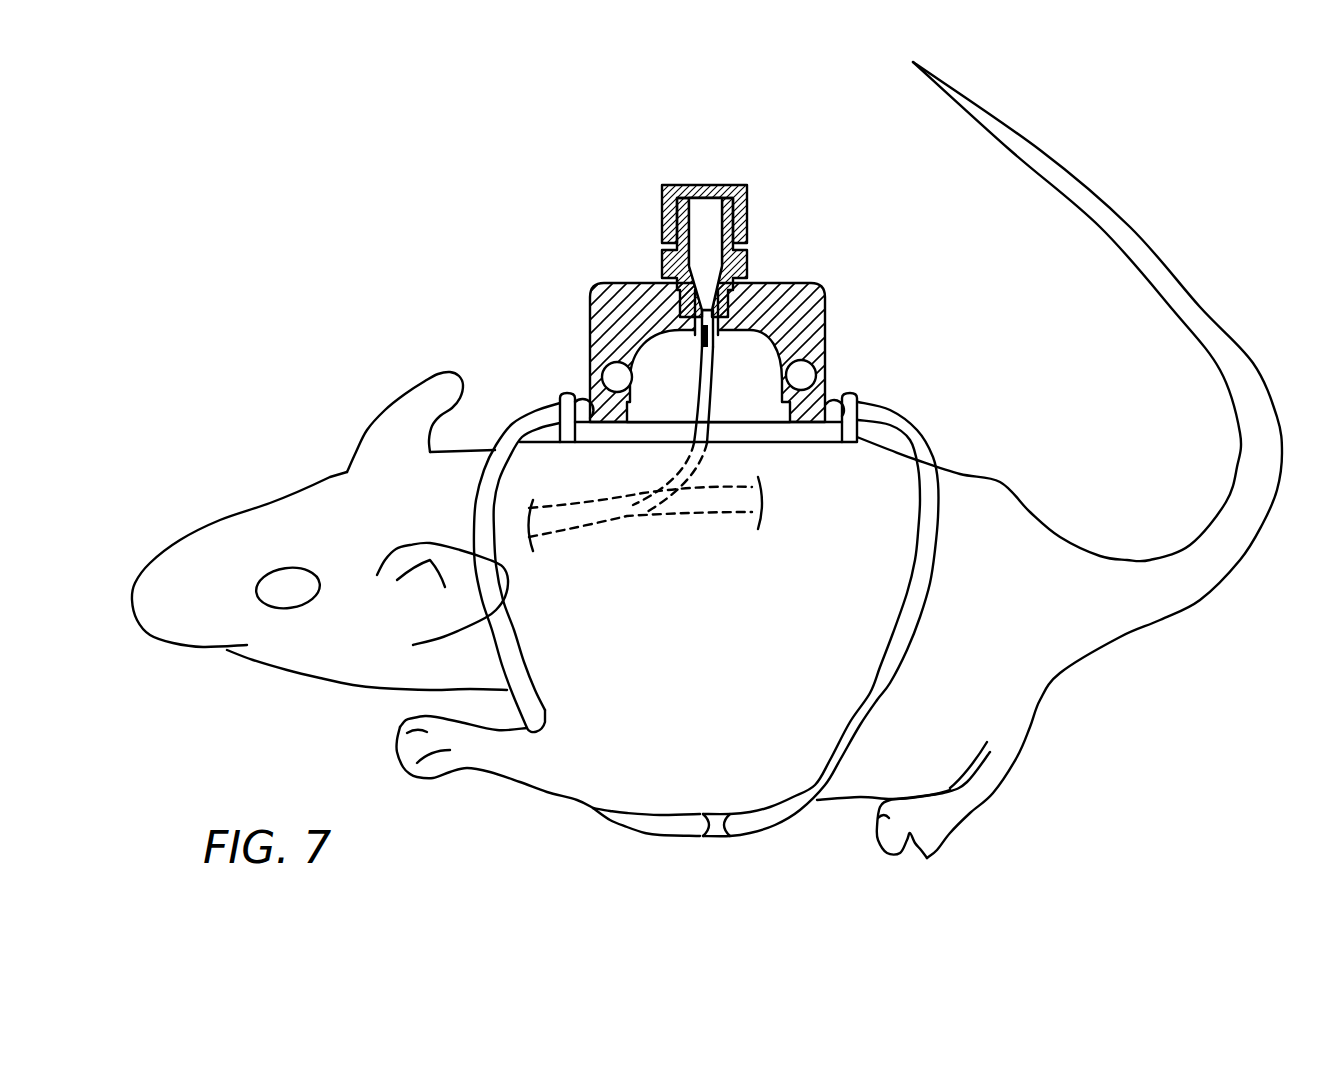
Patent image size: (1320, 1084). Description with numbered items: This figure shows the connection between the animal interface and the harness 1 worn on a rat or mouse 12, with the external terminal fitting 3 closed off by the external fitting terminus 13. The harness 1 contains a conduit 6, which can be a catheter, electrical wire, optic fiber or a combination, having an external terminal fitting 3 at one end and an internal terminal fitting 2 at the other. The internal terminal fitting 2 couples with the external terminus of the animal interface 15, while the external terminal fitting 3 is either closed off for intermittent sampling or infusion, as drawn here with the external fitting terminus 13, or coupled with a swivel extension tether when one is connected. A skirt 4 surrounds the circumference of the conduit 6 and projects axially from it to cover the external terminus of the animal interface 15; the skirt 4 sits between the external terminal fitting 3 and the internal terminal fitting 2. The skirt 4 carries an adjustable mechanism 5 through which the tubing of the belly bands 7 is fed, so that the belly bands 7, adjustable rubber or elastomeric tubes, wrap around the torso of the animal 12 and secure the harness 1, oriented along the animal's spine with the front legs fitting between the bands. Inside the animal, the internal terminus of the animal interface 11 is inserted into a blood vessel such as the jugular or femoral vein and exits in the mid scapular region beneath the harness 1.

The harness 1 is at (541, 234).
The internal terminal fitting 2 is at (715, 331).
The external terminal fitting 3 is at (687, 183).
The skirt 4 is at (823, 300).
The adjustable mechanism 5 is at (613, 377).
The conduit 6 is at (707, 228).
The belly band 7 is at (930, 505).
The internal terminus of the animal interface 11 is at (639, 512).
The rat/mouse 12 is at (1007, 677).
The external fitting terminus 13 is at (717, 182).
The external terminus of animal interface 15 is at (690, 367).